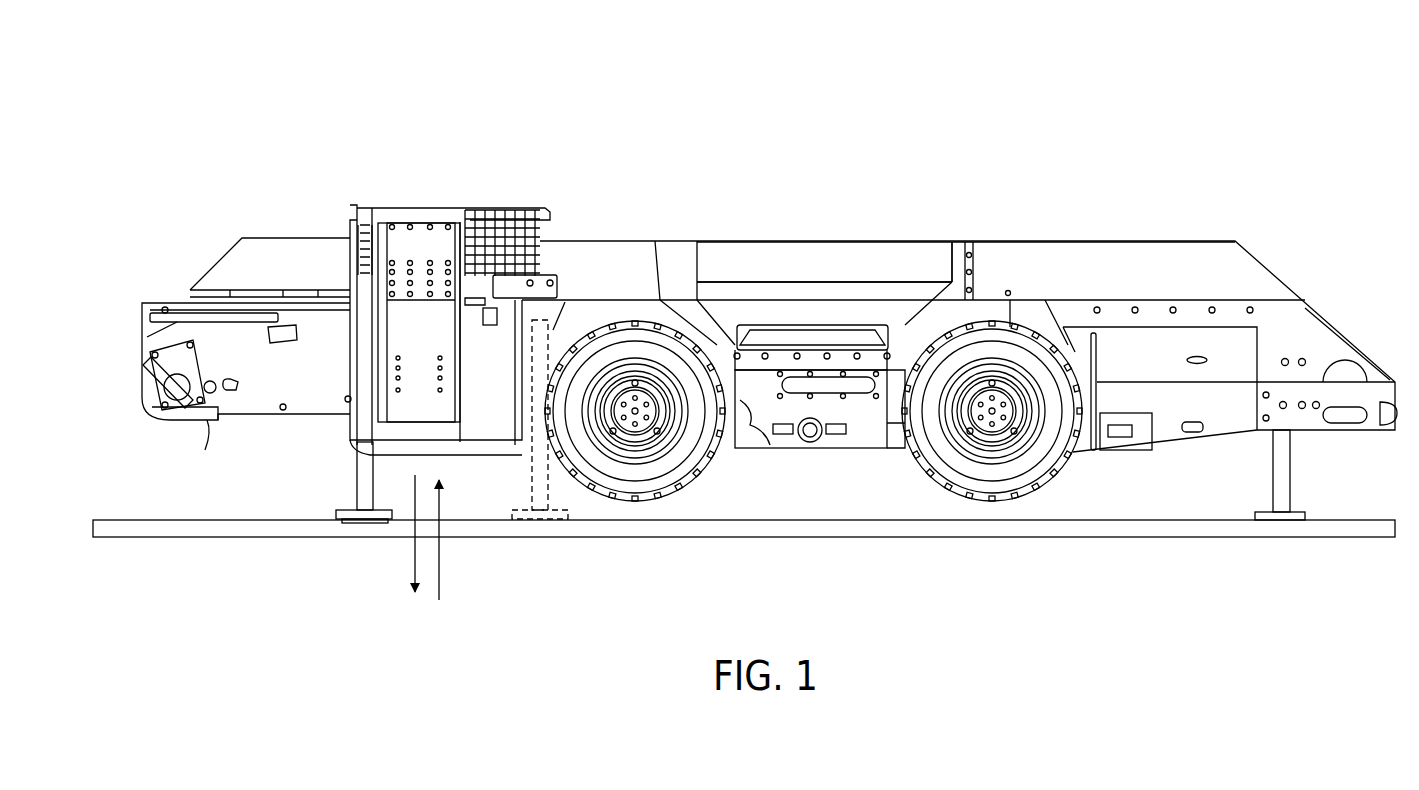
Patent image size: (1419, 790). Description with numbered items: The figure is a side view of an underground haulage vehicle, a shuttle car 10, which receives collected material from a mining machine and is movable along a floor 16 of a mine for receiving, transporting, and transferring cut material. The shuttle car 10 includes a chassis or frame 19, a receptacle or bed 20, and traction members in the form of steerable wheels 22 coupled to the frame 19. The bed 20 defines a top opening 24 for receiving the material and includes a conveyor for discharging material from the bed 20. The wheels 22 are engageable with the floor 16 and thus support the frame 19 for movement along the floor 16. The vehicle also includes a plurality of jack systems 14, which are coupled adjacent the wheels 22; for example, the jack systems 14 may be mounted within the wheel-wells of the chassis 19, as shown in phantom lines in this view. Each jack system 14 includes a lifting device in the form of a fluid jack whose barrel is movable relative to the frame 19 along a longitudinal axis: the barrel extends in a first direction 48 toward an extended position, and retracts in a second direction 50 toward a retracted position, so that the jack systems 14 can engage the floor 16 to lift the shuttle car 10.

The shuttle car 10 is at (256, 120).
The jack system 14 is at (340, 473).
The floor 16 is at (113, 520).
The frame 19 is at (218, 430).
The bed 20 is at (884, 210).
The wheels 22 is at (703, 468).
The top opening 24 is at (933, 250).
The first direction 48 is at (413, 553).
The second direction 50 is at (441, 553).